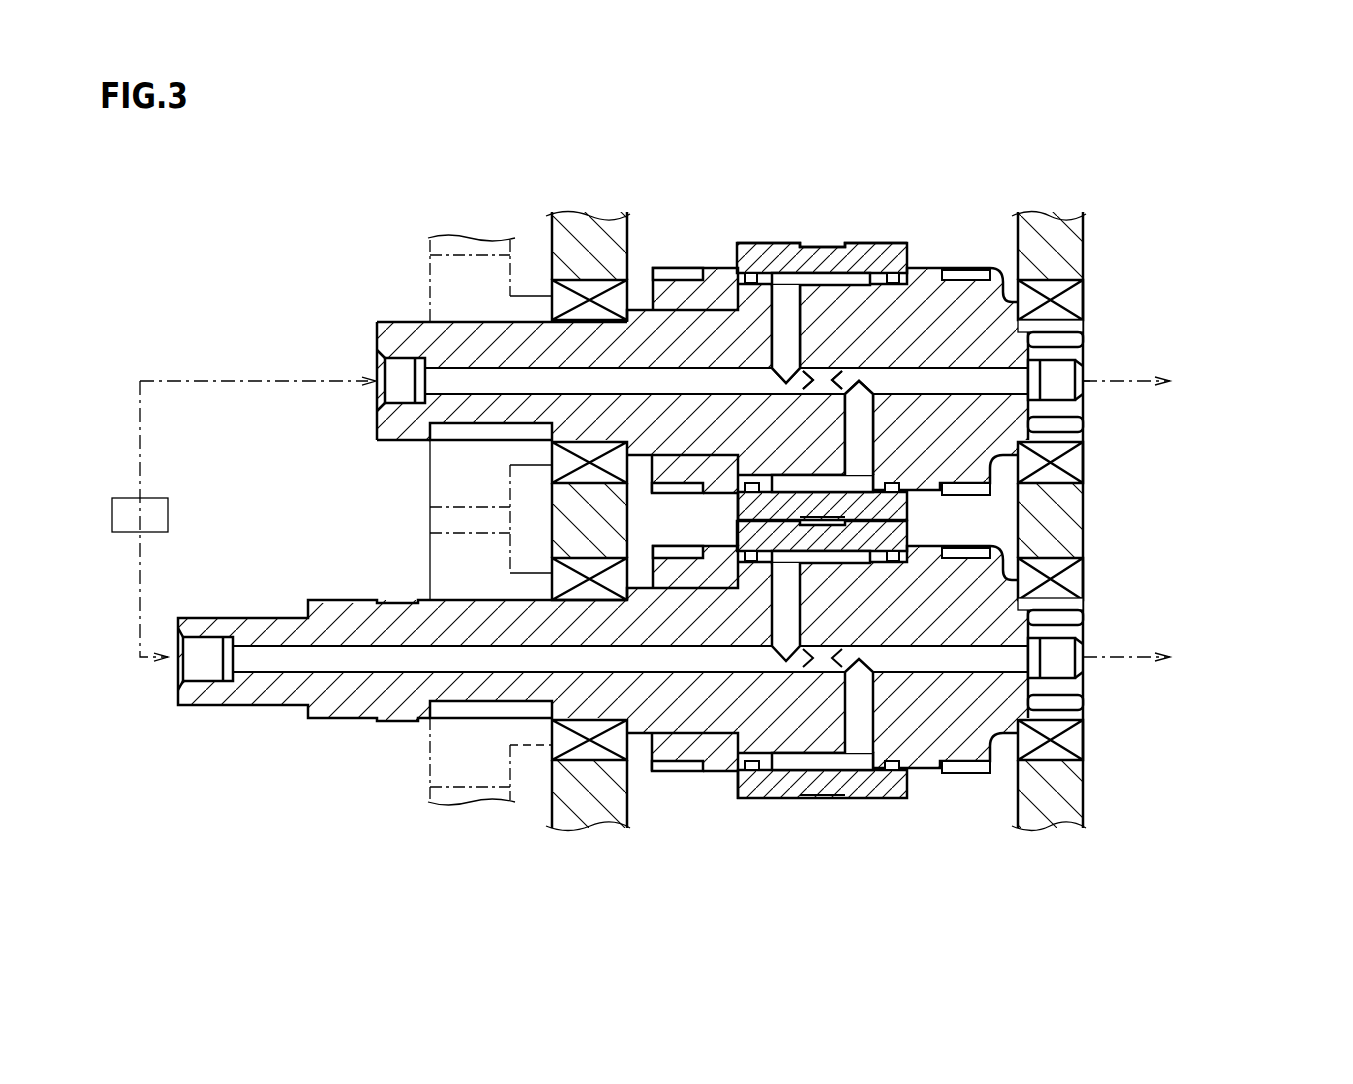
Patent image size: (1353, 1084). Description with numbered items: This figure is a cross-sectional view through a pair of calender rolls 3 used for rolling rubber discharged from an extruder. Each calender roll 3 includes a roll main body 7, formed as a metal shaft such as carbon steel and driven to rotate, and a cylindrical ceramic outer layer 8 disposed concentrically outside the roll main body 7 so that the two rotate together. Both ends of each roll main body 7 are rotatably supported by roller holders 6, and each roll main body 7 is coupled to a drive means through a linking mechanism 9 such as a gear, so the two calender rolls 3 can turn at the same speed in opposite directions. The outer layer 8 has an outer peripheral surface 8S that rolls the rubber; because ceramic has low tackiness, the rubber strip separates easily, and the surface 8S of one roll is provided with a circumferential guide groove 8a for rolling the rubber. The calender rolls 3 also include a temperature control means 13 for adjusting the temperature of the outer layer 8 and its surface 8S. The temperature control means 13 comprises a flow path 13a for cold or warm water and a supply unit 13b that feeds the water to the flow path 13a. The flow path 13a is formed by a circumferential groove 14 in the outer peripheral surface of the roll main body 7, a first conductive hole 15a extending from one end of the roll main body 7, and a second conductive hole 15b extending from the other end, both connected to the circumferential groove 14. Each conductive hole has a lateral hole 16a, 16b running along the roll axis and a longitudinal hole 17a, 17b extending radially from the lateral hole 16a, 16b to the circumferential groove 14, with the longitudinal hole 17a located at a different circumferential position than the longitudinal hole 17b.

The calender roll 3 is at (1127, 367).
The roller holder 6 is at (560, 240).
The roll main body 7 is at (952, 320).
The outer layer 8 is at (790, 245).
The guide groove 8a is at (822, 245).
The outer peripheral surface 8S is at (882, 243).
The linking mechanism 9 is at (430, 258).
The temperature control means 13 is at (328, 460).
The flow path 13a is at (696, 410).
The supply unit 13b is at (160, 497).
The circumferential groove 14 is at (775, 278).
The first conductive hole 15a is at (627, 160).
The second conductive hole 15b is at (1228, 440).
The lateral hole 16a is at (652, 382).
The lateral hole 16b is at (960, 388).
The longitudinal hole 17a is at (783, 318).
The longitudinal hole 17b is at (875, 447).